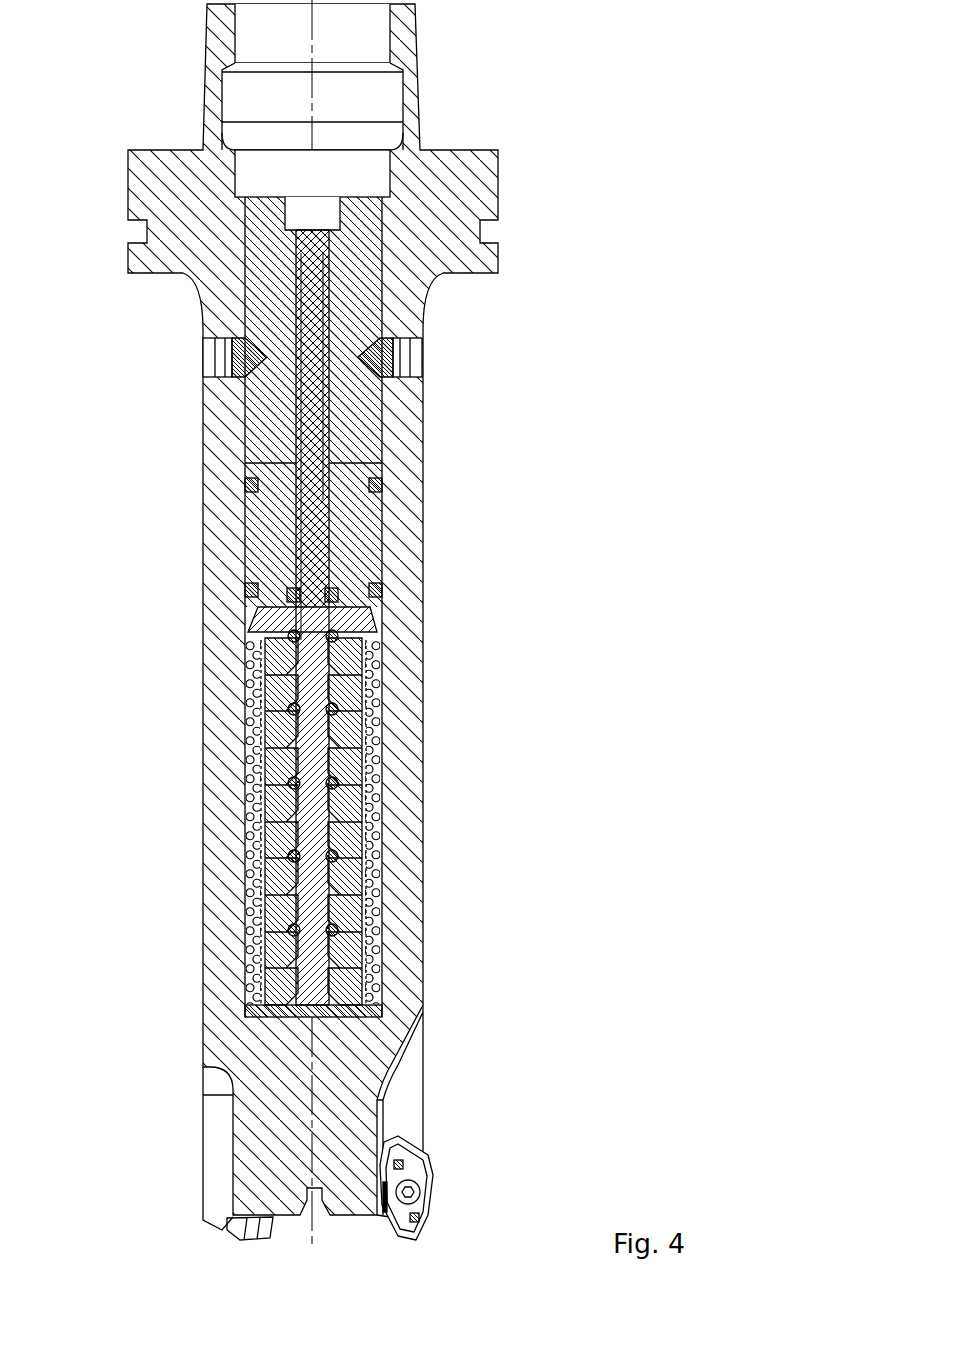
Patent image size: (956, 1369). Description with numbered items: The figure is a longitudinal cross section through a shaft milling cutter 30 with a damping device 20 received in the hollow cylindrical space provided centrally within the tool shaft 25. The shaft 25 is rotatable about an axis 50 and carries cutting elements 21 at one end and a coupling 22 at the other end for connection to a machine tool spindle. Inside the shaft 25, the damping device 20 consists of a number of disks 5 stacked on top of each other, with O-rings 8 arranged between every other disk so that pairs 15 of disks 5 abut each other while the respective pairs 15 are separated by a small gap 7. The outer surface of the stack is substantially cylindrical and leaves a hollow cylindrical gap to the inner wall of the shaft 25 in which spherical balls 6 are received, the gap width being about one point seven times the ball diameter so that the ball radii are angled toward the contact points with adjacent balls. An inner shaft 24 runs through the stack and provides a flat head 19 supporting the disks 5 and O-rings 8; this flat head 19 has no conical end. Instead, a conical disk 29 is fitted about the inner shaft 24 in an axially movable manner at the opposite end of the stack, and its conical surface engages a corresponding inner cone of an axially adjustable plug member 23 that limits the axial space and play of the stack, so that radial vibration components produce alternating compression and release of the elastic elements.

The coupling 22 is at (419, 72).
The axis 50 is at (312, 108).
The inner shaft 24 is at (320, 427).
The shaft milling cutter 30 is at (349, 624).
The axially adjustable plug member 23 is at (257, 528).
The damping device 20 is at (355, 609).
The conical disk 29 is at (250, 594).
The spherical balls 6 is at (258, 690).
The disks 5 is at (352, 686).
The pairs of disks 15 is at (258, 818).
The gap 7 is at (360, 768).
The shaft 25 is at (407, 792).
The O-rings 8 is at (297, 857).
The flat head 19 is at (292, 1012).
The cutting elements 21 is at (432, 1220).